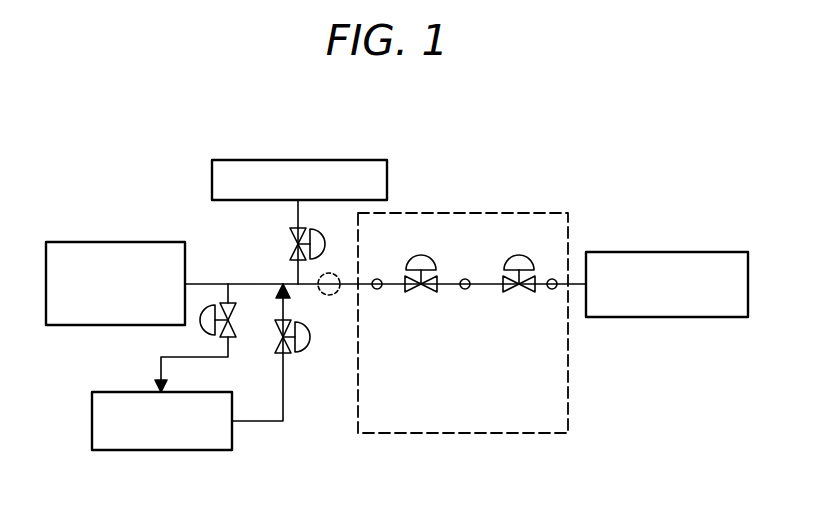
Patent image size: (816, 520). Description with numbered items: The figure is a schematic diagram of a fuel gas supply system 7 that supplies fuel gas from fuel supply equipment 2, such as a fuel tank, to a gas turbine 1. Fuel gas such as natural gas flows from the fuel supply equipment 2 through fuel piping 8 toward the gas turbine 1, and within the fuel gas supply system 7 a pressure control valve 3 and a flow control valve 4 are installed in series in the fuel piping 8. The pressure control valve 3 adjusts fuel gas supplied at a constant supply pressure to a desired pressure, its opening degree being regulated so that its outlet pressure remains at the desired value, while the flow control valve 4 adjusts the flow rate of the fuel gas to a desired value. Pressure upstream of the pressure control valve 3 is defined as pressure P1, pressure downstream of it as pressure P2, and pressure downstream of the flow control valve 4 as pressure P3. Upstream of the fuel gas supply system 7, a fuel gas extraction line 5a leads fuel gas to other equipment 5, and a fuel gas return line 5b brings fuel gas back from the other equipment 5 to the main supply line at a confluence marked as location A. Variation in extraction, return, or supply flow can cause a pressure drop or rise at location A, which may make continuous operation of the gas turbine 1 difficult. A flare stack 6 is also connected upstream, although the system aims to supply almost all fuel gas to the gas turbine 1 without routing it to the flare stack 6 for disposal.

The gas turbine 1 is at (690, 252).
The fuel supply equipment 2 is at (111, 242).
The pressure control valve 3 is at (432, 263).
The flow control valve 4 is at (510, 262).
The other equipment 5 is at (161, 450).
The fuel gas extraction line 5a is at (161, 372).
The fuel gas return line 5b is at (283, 392).
The flare stack 6 is at (336, 160).
The fuel gas supply system 7 is at (568, 221).
The fuel piping 8 is at (255, 284).
The location A is at (330, 295).
The pressure P1 is at (371, 268).
The pressure P2 is at (459, 300).
The pressure P3 is at (552, 270).